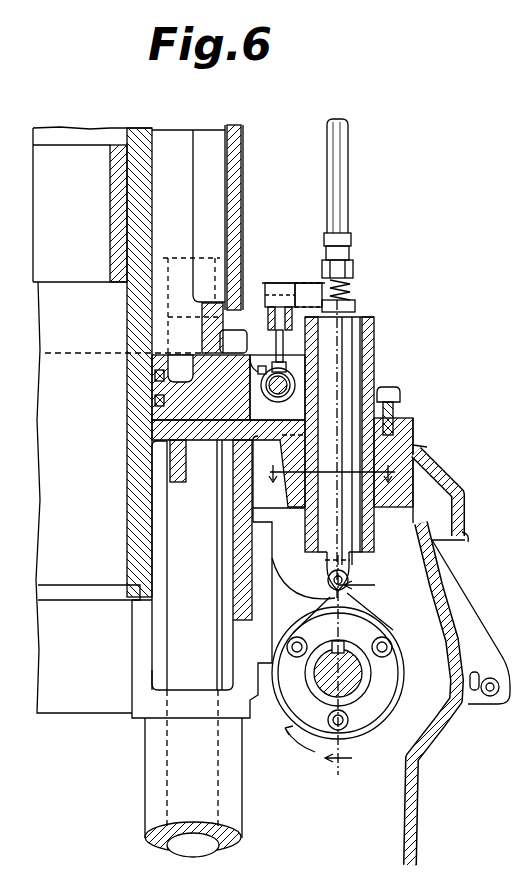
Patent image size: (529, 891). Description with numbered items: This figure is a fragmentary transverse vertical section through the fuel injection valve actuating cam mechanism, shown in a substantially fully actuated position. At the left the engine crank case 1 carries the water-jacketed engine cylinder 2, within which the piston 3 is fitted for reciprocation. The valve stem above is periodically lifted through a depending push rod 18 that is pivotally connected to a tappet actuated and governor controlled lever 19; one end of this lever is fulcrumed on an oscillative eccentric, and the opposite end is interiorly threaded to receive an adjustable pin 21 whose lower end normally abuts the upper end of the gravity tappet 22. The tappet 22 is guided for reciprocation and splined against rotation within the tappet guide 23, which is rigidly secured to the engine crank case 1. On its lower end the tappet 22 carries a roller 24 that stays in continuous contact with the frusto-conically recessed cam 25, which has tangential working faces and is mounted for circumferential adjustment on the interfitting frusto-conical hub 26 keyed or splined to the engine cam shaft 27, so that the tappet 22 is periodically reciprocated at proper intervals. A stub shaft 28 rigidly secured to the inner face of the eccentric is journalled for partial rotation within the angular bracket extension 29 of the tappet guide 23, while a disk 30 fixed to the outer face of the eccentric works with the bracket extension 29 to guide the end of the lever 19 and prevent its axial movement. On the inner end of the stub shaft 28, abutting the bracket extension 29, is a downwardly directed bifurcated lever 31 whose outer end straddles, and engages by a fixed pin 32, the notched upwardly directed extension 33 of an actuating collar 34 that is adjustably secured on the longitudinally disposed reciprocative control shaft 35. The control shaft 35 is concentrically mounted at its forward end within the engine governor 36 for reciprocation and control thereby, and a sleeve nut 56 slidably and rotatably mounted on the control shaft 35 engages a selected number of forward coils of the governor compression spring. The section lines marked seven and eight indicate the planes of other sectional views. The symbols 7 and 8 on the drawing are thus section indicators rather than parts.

The engine crank case 1 is at (385, 797).
The engine cylinder 2 is at (111, 130).
The piston 3 is at (69, 268).
The section line 7- 7 is at (357, 665).
The section line 8- 8 is at (330, 473).
The push rod 18 is at (336, 178).
The lever 19 is at (351, 258).
The adjustable pin 21 is at (352, 241).
The tappet 22 is at (338, 373).
The tappet guide 23 is at (373, 332).
The roller 24 is at (352, 578).
The cam 25 is at (360, 720).
The hub 26 is at (362, 695).
The engine cam shaft 27 is at (350, 676).
The stub shaft 28 is at (268, 285).
The bracket extension 29 is at (305, 283).
The disk 30 is at (355, 284).
The bifurcated lever 31 is at (281, 283).
The pin 32 is at (233, 341).
The extension 33 is at (276, 340).
The actuating collar 34 is at (298, 374).
The control shaft 35 is at (292, 402).
The engine governor 36 is at (280, 393).
The sleeve nut 56 is at (280, 393).